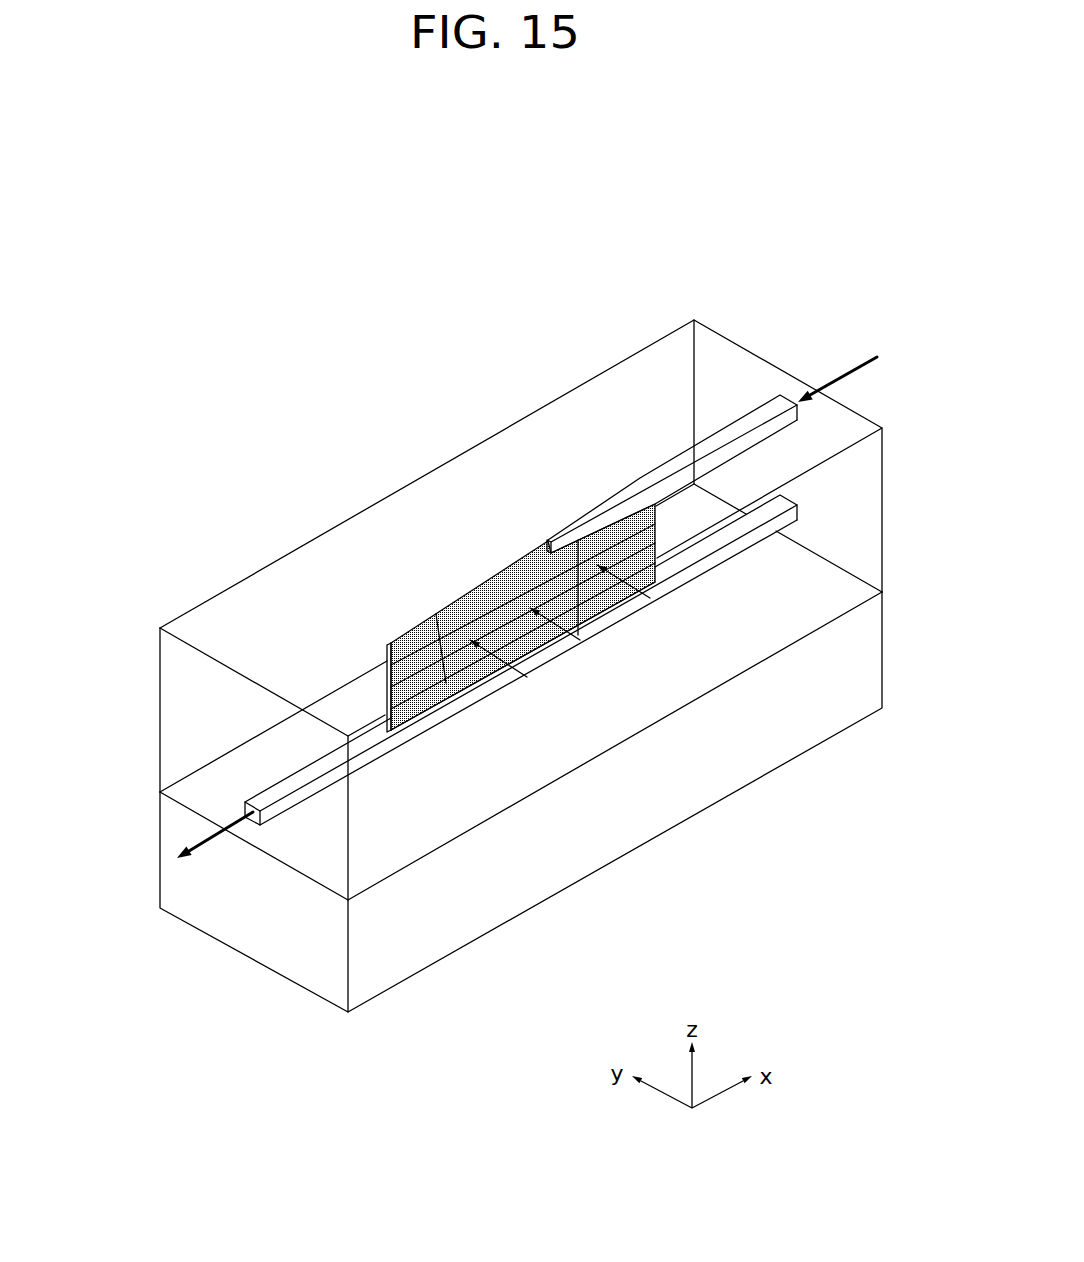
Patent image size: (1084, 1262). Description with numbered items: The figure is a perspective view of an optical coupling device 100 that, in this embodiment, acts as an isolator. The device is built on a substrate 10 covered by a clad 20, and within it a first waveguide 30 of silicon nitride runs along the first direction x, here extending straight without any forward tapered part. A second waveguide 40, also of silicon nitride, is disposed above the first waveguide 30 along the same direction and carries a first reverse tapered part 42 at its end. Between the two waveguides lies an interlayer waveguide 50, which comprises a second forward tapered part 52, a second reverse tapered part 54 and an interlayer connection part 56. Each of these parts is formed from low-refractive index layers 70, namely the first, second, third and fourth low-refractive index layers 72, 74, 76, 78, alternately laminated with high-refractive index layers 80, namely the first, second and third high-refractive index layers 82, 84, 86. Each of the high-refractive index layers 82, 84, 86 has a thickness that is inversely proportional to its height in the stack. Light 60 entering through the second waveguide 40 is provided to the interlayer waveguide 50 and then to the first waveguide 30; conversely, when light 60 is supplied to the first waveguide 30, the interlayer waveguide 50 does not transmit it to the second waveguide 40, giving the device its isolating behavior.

The optical coupling device 100 is at (392, 368).
The substrate 10 is at (874, 657).
The clad 20 is at (874, 548).
The first waveguide 30 is at (373, 755).
The second waveguide 40 is at (660, 473).
The first reverse tapered part 42 is at (603, 507).
The interlayer waveguide 50 is at (648, 940).
The second forward tapered part 52 is at (650, 598).
The second reverse tapered part 54 is at (527, 677).
The interlayer connection part 56 is at (580, 640).
The light 60 is at (842, 372).
The low-refractive index layers 70 is at (90, 655).
The first low-refractive index layer 72 is at (387, 712).
The second low-refractive index layer 74 is at (387, 690).
The third low-refractive index layer 76 is at (387, 667).
The fourth low-refractive index layer 78 is at (387, 647).
The high-refractive index layers 80 is at (363, 437).
The first high-refractive index layer 82 is at (389, 641).
The second high-refractive index layer 84 is at (446, 683).
The third high-refractive index layer 86 is at (493, 688).